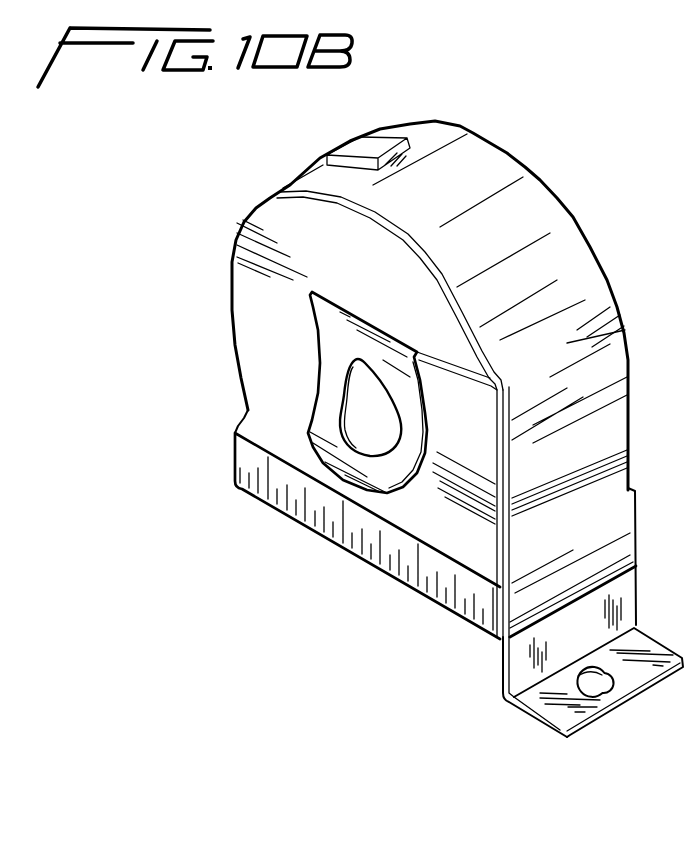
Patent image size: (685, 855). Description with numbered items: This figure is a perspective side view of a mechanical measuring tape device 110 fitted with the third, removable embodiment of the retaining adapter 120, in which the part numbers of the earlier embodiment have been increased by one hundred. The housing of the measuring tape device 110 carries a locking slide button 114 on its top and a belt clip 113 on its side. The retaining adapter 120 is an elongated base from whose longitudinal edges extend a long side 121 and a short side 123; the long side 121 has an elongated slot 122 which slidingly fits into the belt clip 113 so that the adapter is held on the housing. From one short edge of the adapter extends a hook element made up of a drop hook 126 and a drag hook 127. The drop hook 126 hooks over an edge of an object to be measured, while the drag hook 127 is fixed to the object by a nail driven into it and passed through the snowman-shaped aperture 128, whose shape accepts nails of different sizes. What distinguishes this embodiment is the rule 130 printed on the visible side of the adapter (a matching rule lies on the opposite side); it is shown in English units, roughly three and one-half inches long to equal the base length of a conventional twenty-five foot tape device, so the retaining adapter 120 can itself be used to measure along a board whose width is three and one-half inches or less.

The mechanical measuring tape device 110 is at (553, 187).
The belt clip 113 is at (330, 352).
The locking slide button 114 is at (358, 148).
The retaining adapter 120 is at (224, 268).
The long side 121 is at (273, 405).
The elongated slot 122 is at (502, 387).
The short side 123 is at (638, 507).
The drop hook 126 is at (515, 678).
The drag hook 127 is at (537, 708).
The aperture 128 is at (603, 682).
The rule 130 is at (377, 530).